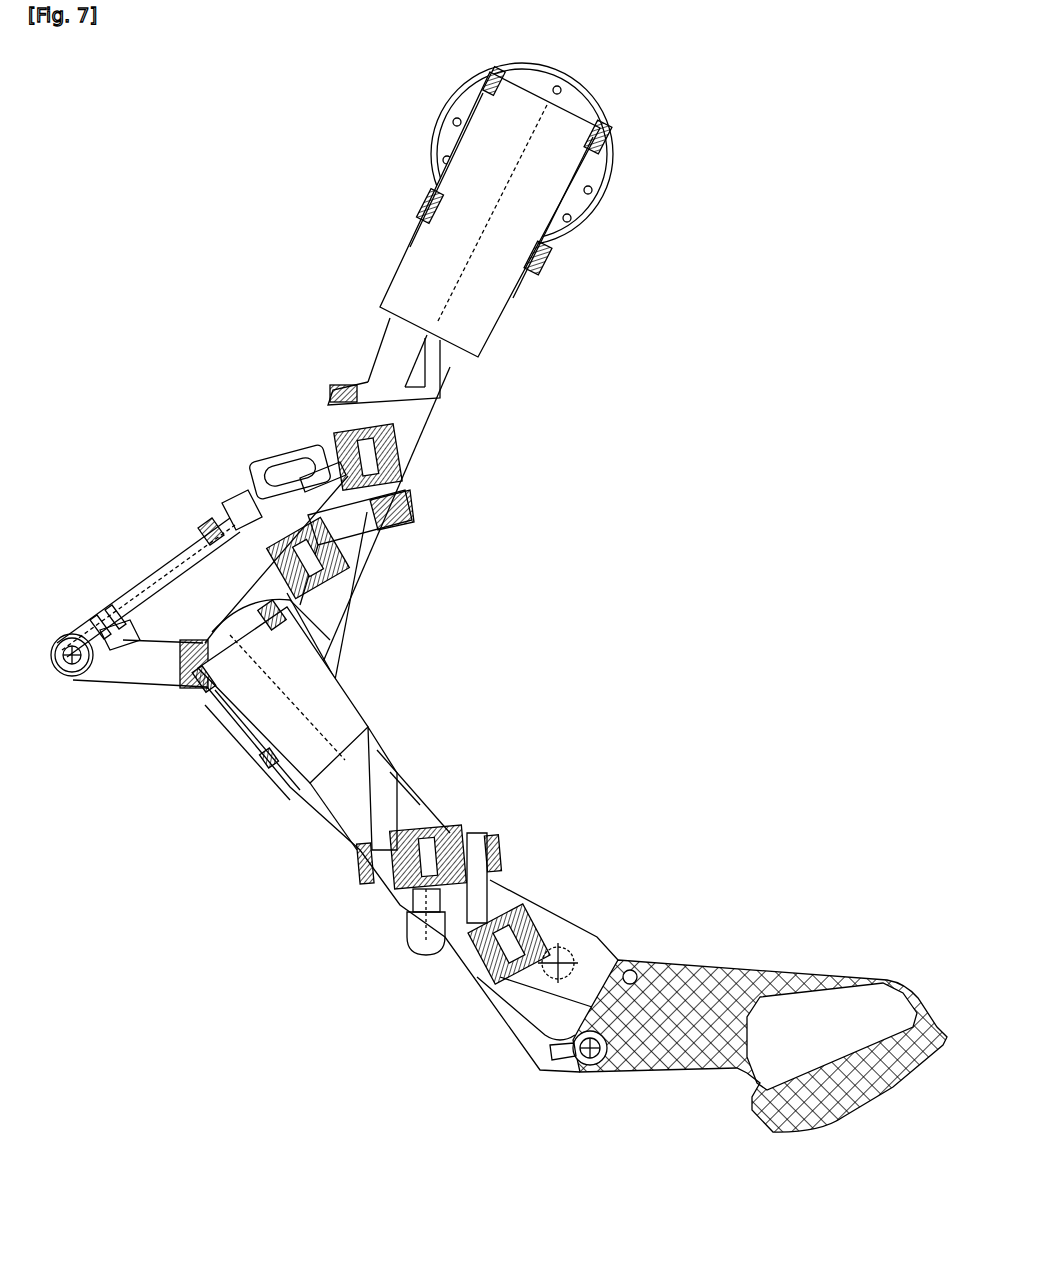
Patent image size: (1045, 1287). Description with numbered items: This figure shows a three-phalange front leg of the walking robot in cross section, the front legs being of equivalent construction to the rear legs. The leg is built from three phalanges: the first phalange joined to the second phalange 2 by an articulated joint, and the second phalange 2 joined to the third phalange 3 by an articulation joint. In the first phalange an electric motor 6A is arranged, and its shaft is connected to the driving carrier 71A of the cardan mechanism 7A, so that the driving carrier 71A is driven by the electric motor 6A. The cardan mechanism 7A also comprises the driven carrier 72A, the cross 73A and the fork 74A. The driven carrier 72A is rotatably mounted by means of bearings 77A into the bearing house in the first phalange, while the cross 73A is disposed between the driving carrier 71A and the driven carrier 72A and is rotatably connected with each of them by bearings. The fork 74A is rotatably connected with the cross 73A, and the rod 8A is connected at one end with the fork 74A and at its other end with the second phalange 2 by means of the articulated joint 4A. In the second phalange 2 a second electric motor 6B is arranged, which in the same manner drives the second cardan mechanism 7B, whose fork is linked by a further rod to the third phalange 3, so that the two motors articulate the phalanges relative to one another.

The second phalange 2 is at (280, 857).
The third phalange 3 is at (718, 943).
The articulated joint 4A is at (76, 684).
The electric motor 6A is at (430, 250).
The electric motor 6B is at (332, 706).
The cardan mechanism 7A is at (405, 472).
The cardan mechanism 7B is at (482, 810).
The rod 8A is at (205, 528).
The driving carrier 71A is at (436, 366).
The driven carrier 72A is at (412, 508).
The cross 73A is at (400, 440).
The fork 74A is at (285, 458).
The bearings 77A is at (355, 573).